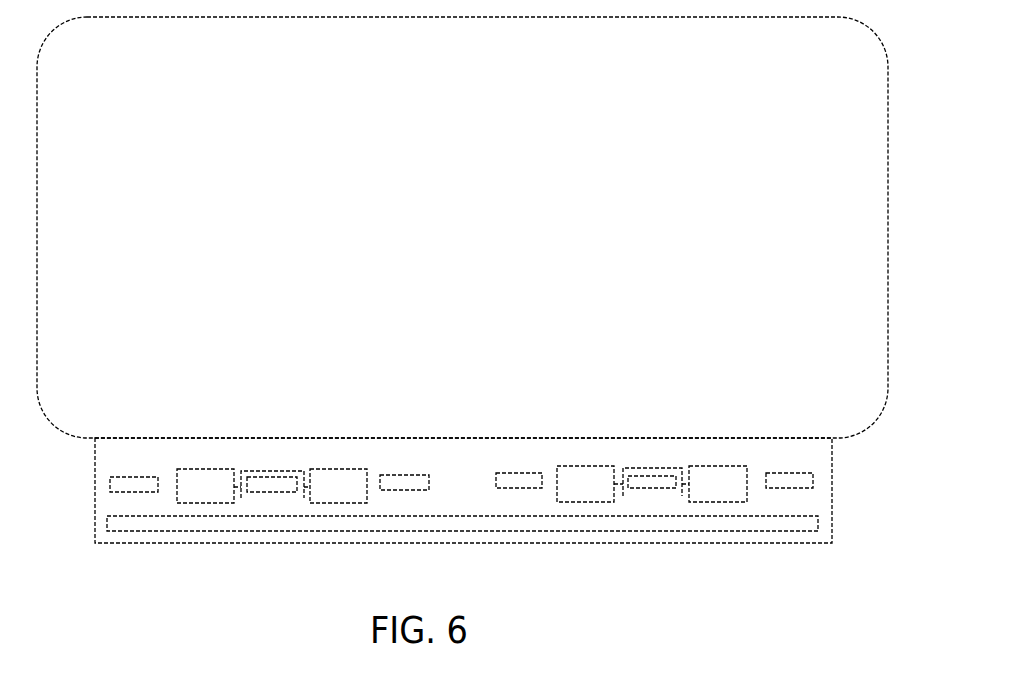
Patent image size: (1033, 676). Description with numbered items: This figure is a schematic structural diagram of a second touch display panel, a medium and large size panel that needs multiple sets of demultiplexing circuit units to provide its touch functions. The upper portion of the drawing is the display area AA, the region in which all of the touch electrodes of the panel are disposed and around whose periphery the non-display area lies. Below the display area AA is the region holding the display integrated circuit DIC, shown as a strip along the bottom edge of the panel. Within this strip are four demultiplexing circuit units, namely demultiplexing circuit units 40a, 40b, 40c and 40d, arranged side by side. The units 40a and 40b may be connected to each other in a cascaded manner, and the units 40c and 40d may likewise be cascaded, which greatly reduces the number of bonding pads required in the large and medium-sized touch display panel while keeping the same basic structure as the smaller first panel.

The display area AA is at (863, 258).
The display integrated circuit DIC is at (110, 483).
The demultiplexing circuit unit 40a is at (212, 498).
The demultiplexing circuit unit 40b is at (345, 498).
The demultiplexing circuit unit 40c is at (590, 498).
The demultiplexing circuit unit 40d is at (725, 498).